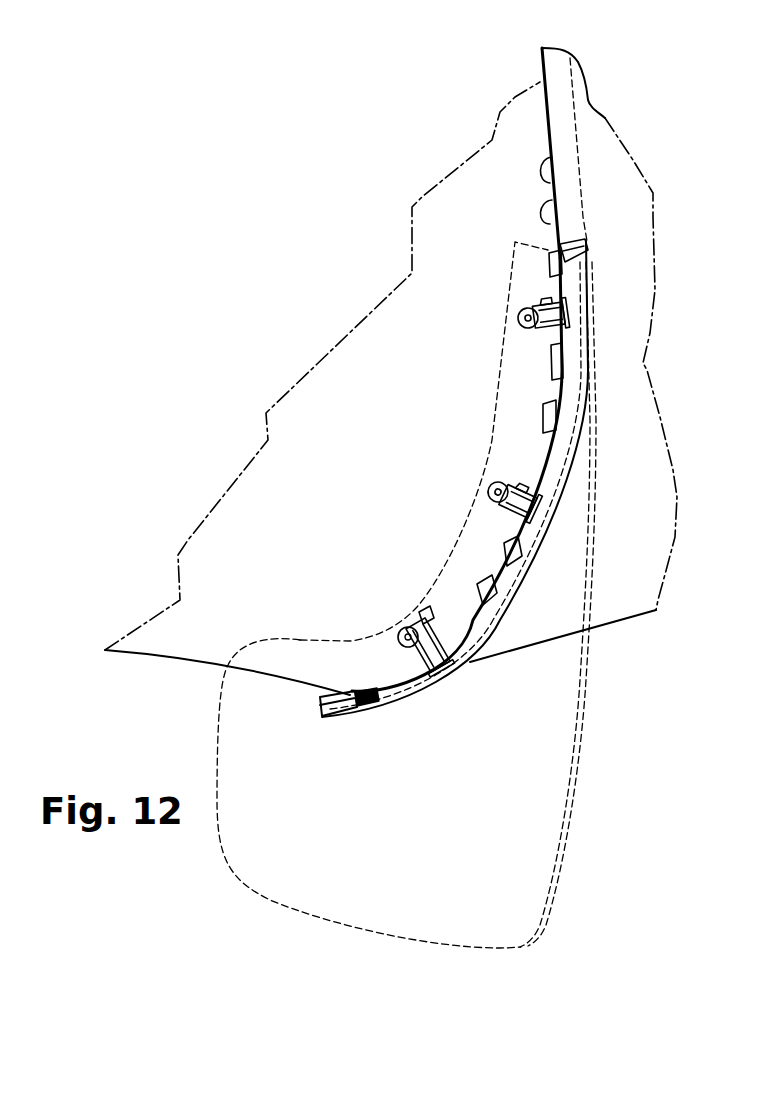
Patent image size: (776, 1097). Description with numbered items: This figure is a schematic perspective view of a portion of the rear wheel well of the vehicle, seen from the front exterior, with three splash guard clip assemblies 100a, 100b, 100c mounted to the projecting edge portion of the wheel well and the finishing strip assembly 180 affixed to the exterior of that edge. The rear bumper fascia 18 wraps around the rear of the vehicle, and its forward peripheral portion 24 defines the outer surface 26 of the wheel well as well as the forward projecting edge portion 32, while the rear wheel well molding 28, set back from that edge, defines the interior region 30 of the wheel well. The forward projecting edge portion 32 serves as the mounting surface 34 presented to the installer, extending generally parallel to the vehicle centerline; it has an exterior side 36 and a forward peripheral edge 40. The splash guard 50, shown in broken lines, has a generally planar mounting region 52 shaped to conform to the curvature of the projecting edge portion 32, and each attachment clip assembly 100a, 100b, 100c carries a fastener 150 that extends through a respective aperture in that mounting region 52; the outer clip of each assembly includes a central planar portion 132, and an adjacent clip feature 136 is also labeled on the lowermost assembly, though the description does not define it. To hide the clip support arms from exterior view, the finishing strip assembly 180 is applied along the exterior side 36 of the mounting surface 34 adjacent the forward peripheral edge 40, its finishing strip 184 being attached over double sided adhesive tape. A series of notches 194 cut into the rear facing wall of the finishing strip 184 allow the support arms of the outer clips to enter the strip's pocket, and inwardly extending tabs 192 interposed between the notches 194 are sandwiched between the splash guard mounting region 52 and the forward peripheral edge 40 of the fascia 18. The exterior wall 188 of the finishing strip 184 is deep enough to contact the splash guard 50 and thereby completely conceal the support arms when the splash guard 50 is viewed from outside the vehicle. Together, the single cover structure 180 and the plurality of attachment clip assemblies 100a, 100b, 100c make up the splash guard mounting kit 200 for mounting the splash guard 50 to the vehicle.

The rear bumper fascia 18 is at (647, 498).
The forward peripheral portion 24 is at (565, 136).
The outer surface 26 is at (628, 578).
The rear wheel well molding 28 is at (382, 373).
The interior region 30 is at (262, 508).
The forward projecting edge portion 32 is at (558, 93).
The mounting surface 34 is at (552, 158).
The exterior side 36 is at (572, 230).
The forward peripheral edge 40 is at (556, 221).
The splash guard 50 is at (503, 753).
The splash guard mounting region 52 is at (478, 554).
The attachment clip assembly 100a is at (505, 302).
The attachment clip assembly 100b is at (470, 481).
The attachment clip assembly 100c is at (375, 665).
The central planar portion 132 is at (440, 675).
The clip bracket 136 is at (428, 614).
The fastener 150 is at (411, 650).
The finishing strip assembly 180 is at (612, 325).
The finishing strip 184 is at (580, 265).
The exterior wall 188 is at (582, 283).
The inwardly extending tabs 192 is at (549, 421).
The notches 194 is at (552, 391).
The splash guard mounting kit 200 is at (470, 429).